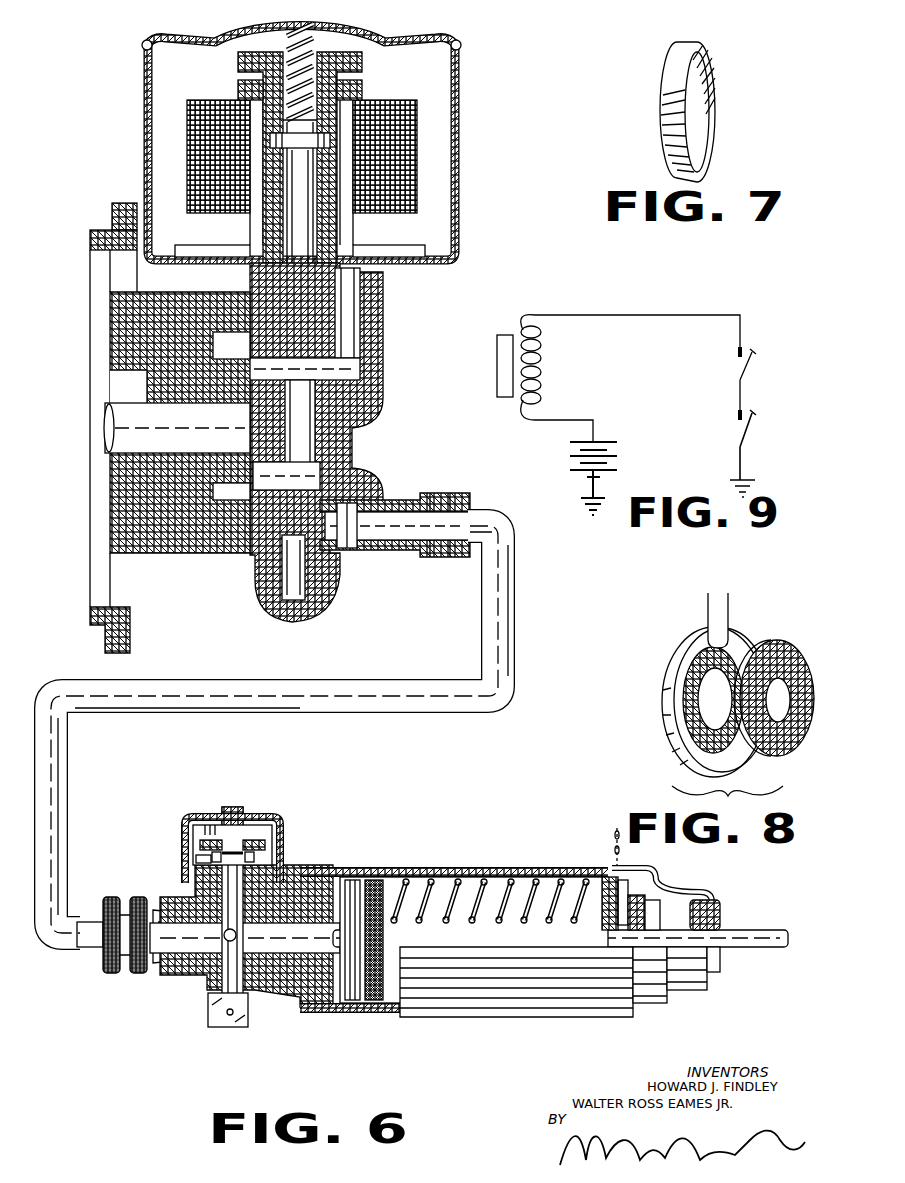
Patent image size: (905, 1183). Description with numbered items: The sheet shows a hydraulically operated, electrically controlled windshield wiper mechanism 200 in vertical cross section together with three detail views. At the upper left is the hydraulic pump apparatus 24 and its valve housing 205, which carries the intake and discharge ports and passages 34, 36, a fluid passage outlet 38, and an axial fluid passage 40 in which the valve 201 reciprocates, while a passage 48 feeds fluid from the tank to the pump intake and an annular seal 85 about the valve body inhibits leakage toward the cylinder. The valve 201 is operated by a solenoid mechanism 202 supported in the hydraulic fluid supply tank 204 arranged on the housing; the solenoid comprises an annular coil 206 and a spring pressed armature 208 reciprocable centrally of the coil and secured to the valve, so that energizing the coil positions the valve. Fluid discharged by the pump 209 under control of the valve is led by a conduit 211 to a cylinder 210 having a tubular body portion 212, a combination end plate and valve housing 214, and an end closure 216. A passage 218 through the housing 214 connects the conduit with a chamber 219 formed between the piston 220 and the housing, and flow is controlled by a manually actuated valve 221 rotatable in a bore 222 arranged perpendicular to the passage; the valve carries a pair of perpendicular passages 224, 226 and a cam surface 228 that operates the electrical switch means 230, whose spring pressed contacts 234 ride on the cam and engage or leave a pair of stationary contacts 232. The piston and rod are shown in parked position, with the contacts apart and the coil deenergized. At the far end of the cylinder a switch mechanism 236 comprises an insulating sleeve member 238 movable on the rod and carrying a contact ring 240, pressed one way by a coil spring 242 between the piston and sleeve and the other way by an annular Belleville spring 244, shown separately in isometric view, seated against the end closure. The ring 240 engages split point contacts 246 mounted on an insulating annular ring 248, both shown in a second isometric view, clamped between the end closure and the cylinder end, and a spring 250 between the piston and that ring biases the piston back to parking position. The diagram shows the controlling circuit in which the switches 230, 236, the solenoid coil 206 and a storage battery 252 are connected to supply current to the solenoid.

In FIG. 6, the hydraulic pump apparatus 24 is at (190, 553).
In FIG. 6, the intake port and passage 34 is at (352, 368).
In FIG. 6, the discharge port and passage 36 is at (345, 502).
In FIG. 6, the fluid passage outlet 38 is at (348, 548).
In FIG. 6, the fluid passage 40 is at (312, 420).
In FIG. 6, the passage 48 is at (350, 295).
In FIG. 6, the annular seal 85 is at (266, 602).
In FIG. 6, the windshield wiper mechanism 200 is at (524, 596).
In FIG. 6, the valve 201 is at (323, 476).
In FIG. 6, the solenoid mechanism 202 is at (419, 156).
In FIG. 9, the solenoid mechanism 202 is at (545, 361).
In FIG. 6, the hydraulic fluid supply tank 204 is at (453, 200).
In FIG. 6, the valve housing 205 is at (385, 324).
In FIG. 6, the solenoid coil 206 is at (400, 188).
In FIG. 9, the solenoid coil 206 is at (537, 332).
In FIG. 6, the spring pressed armature 208 is at (357, 68).
In FIG. 6, the pump 209 is at (215, 398).
In FIG. 6, the cylinder 210 is at (380, 1010).
In FIG. 6, the conduit 211 is at (292, 690).
In FIG. 6, the tubular body portion 212 is at (485, 998).
In FIG. 6, the combination end plate and valve housing 214 is at (286, 980).
In FIG. 6, the end closure 216 is at (722, 912).
In FIG. 6, the passage 218 is at (220, 950).
In FIG. 6, the chamber 219 is at (349, 1004).
In FIG. 6, the piston 220 is at (368, 1004).
In FIG. 6, the manually actuated valve 221 is at (228, 1030).
In FIG. 6, the bore 222 is at (240, 933).
In FIG. 6, the passage 224 is at (222, 935).
In FIG. 6, the passage 226 is at (213, 942).
In FIG. 6, the cam surface 228 is at (250, 853).
In FIG. 6, the electrical switch means 230 is at (190, 850).
In FIG. 9, the electrical switch means 230 is at (740, 366).
In FIG. 6, the stationary electrical contacts 232 is at (195, 840).
In FIG. 6, the spring pressed contacts 234 is at (203, 860).
In FIG. 6, the switch mechanism 236 is at (630, 900).
In FIG. 9, the switch mechanism 236 is at (740, 425).
In FIG. 6, the sleeve member 238 is at (636, 926).
In FIG. 6, the electrical contact ring 240 is at (612, 928).
In FIG. 8, the electrical contact ring 240 is at (788, 652).
In FIG. 6, the coil spring 242 is at (504, 926).
In FIG. 6, the Belleville spring 244 is at (672, 898).
In FIG. 7, the Belleville spring 244 is at (700, 152).
In FIG. 6, the split point contacts 246 is at (603, 905).
In FIG. 8, the split point contacts 246 is at (745, 655).
In FIG. 6, the annular ring 248 is at (606, 876).
In FIG. 8, the annular ring 248 is at (675, 690).
In FIG. 6, the spring 250 is at (476, 868).
In FIG. 9, the storage battery 252 is at (570, 448).